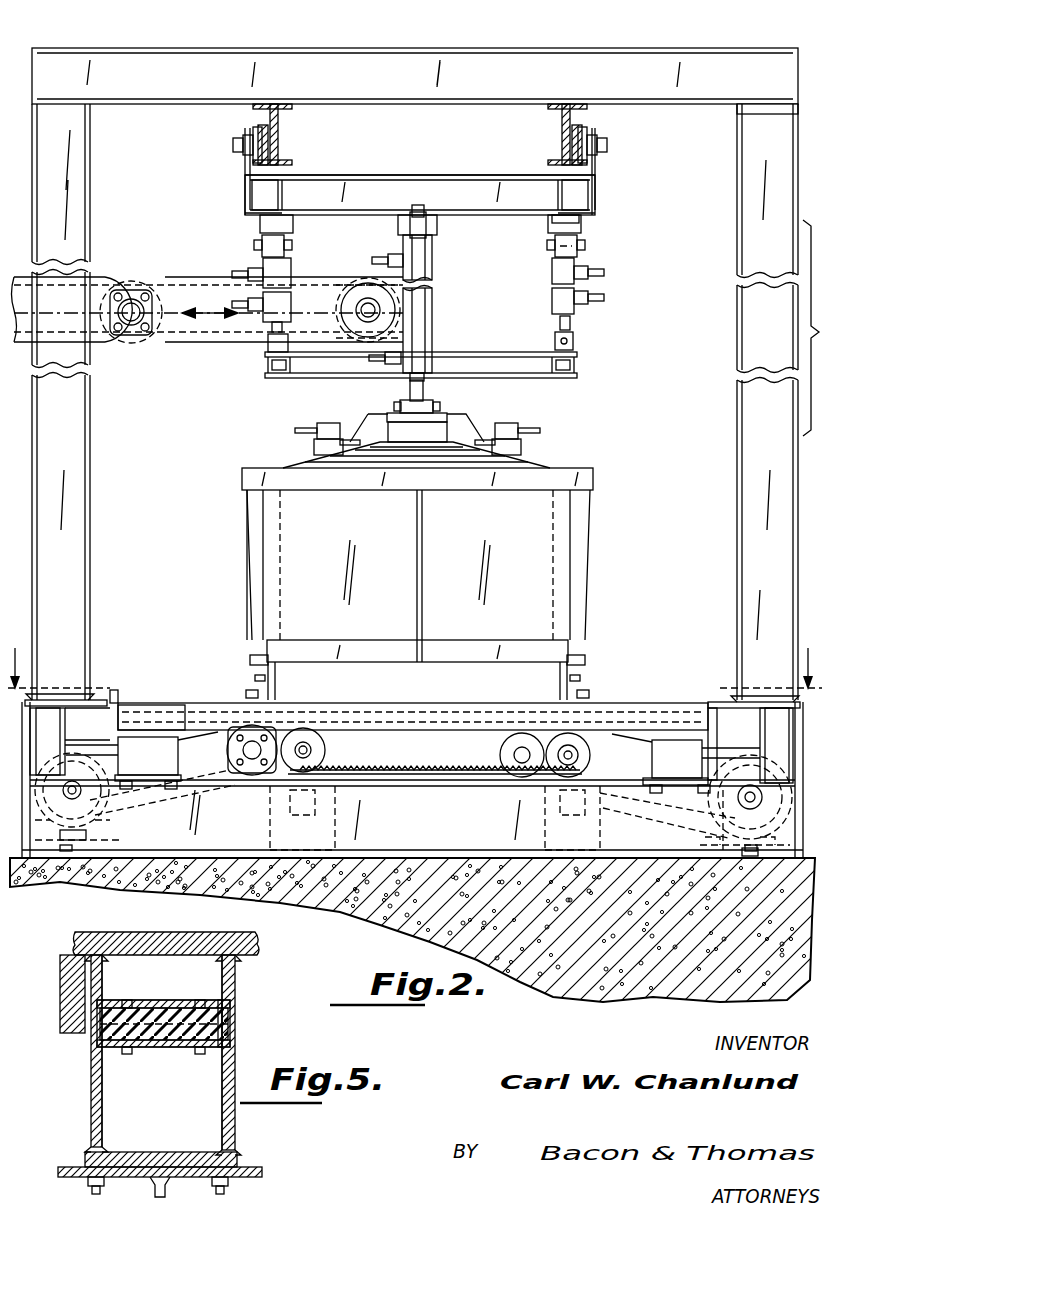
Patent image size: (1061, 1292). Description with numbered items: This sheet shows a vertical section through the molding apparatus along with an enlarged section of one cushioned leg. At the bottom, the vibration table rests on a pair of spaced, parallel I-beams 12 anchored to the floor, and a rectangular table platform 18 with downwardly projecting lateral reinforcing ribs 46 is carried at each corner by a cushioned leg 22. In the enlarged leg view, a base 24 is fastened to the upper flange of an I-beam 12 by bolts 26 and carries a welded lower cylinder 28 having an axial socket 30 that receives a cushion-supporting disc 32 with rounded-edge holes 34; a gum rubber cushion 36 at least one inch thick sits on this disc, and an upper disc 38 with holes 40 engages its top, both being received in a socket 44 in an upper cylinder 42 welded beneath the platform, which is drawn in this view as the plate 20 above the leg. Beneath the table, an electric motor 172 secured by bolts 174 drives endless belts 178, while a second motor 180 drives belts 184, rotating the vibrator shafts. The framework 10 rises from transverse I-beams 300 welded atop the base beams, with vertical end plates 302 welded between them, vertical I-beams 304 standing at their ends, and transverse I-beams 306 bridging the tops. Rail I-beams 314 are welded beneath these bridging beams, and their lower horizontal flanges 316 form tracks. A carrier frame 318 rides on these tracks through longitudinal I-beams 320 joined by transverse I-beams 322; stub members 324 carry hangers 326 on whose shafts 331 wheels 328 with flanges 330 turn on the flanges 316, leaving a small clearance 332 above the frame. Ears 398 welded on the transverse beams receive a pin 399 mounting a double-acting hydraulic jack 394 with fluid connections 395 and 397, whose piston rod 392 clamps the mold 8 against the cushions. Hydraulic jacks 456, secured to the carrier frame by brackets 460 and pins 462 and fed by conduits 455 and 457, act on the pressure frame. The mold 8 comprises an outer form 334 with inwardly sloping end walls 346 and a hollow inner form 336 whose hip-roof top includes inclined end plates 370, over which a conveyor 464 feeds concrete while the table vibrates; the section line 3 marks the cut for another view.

In FIG. 2, the framework 10 is at (743, 38).
In FIG. 2, the transverse I-beams 306 is at (462, 48).
In FIG. 2, the vertical I-beams 304 is at (93, 500).
In FIG. 2, the transverse I-beams 300 is at (62, 700).
In FIG. 2, the vertical end plates 302 is at (413, 745).
In FIG. 2, the section line / support feet 3 is at (604, 668).
In FIG. 2, the conveyor 464 is at (131, 350).
In FIG. 2, the carrier frame 318 is at (416, 162).
In FIG. 2, the longitudinally extending I-beams 320 is at (284, 192).
In FIG. 2, the lower horizontal flanges 316 is at (256, 190).
In FIG. 2, the clearance 332 is at (300, 172).
In FIG. 2, the pin 399 is at (403, 220).
In FIG. 2, the rail I-beams 314 is at (279, 132).
In FIG. 2, the wheel 328 is at (258, 128).
In FIG. 2, the flange 330 is at (243, 140).
In FIG. 2, the shaft 331 is at (235, 150).
In FIG. 2, the hangers 326 is at (245, 174).
In FIG. 2, the stub members 324 is at (256, 221).
In FIG. 2, the brackets 460 is at (583, 228).
In FIG. 2, the pins 462 is at (585, 246).
In FIG. 2, the fluid connection 395 is at (372, 262).
In FIG. 2, the hydraulic jacks 456 is at (552, 272).
In FIG. 2, the operating fluid conduit 455 is at (604, 272).
In FIG. 2, the operating fluid conduit 457 is at (604, 297).
In FIG. 2, the hydraulic jack 394 is at (432, 271).
In FIG. 2, the ears 398 is at (398, 230).
In FIG. 2, the transverse I-beams 322 is at (511, 218).
In FIG. 2, the fluid connection 397 is at (375, 360).
In FIG. 2, the piston rod 392 is at (422, 392).
In FIG. 2, the inner form 336 is at (540, 456).
In FIG. 2, the end walls 346 is at (455, 500).
In FIG. 2, the inclined end plates 370 is at (385, 453).
In FIG. 2, the outer form 334 is at (604, 527).
In FIG. 2, the mold 8 is at (233, 560).
In FIG. 2, the table platform 18 is at (400, 700).
In FIG. 2, the lateral reinforcing ribs 46 is at (146, 700).
In FIG. 5, the lateral reinforcing ribs 46 is at (60, 998).
In FIG. 2, the cushioned leg 22 is at (110, 743).
In FIG. 5, the cushioned leg 22 is at (250, 1043).
In FIG. 2, the belts 184 is at (193, 786).
In FIG. 2, the motor 180 is at (110, 808).
In FIG. 2, the endless belts 178 is at (590, 787).
In FIG. 2, the electric motor 172 is at (718, 822).
In FIG. 2, the bolts 174 is at (715, 846).
In FIG. 5, the top plate 20 is at (258, 935).
In FIG. 5, the lower cylinder 28 is at (91, 1078).
In FIG. 5, the upper cylinder 42 is at (235, 978).
In FIG. 5, the socket 44 is at (235, 1000).
In FIG. 5, the cushion 36 is at (228, 1020).
In FIG. 5, the socket 30 is at (230, 1035).
In FIG. 5, the upper disc 38 is at (155, 1000).
In FIG. 5, the holes 40 is at (126, 1000).
In FIG. 5, the cushion-supporting disc 32 is at (165, 1047).
In FIG. 5, the holes 34 is at (130, 1054).
In FIG. 5, the base 24 is at (237, 1161).
In FIG. 5, the I-beams 12 is at (164, 1188).
In FIG. 5, the bolts 26 is at (88, 1187).